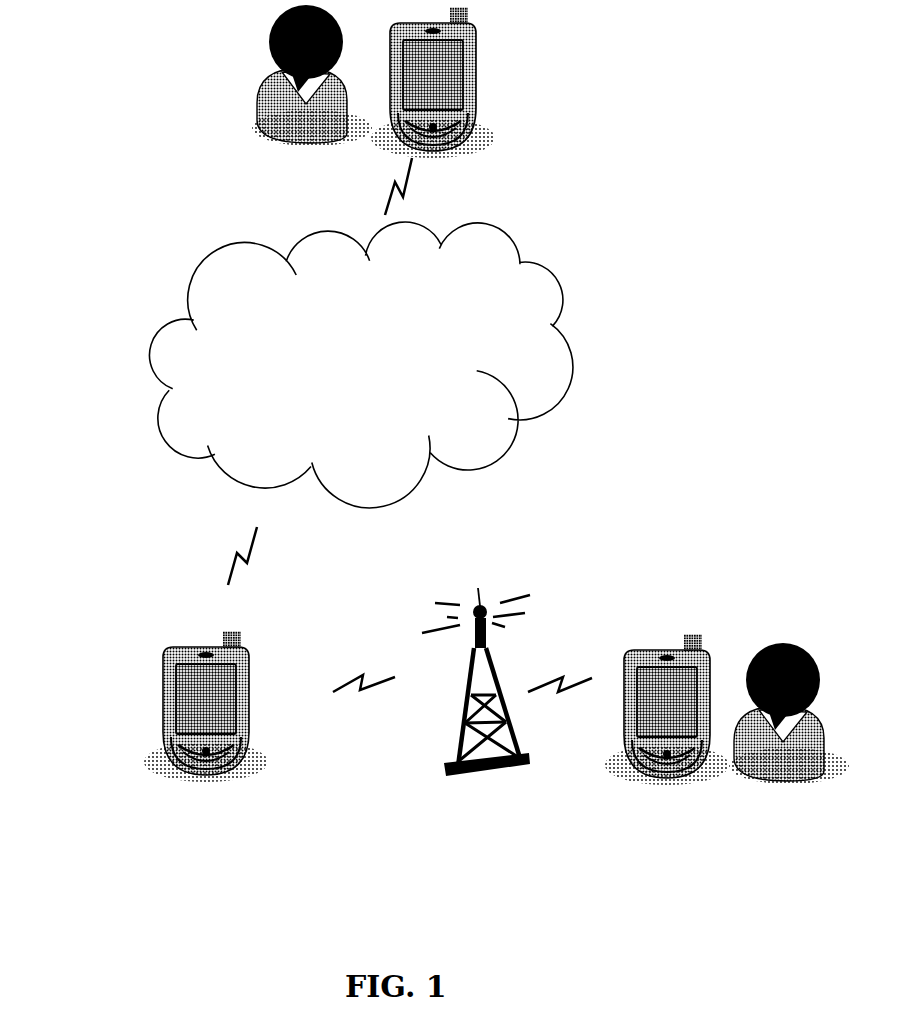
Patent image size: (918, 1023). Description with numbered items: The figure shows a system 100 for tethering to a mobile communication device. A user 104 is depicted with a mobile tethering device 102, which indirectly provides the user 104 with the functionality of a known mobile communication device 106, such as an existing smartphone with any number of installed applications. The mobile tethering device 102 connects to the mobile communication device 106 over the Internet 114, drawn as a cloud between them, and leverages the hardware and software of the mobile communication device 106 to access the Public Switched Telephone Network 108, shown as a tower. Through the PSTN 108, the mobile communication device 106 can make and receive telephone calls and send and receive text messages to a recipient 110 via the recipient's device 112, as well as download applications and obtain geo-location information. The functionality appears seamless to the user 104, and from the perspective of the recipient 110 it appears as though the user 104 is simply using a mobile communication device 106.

The system 100 is at (128, 128).
The mobile tethering device 102 is at (472, 52).
The user 104 is at (255, 102).
The mobile communication device 106 is at (162, 692).
The Public Switched Telephone Network (PSTN) 108 is at (483, 602).
The recipient 110 is at (807, 780).
The recipient's device 112 is at (645, 657).
The Internet 114 is at (570, 363).